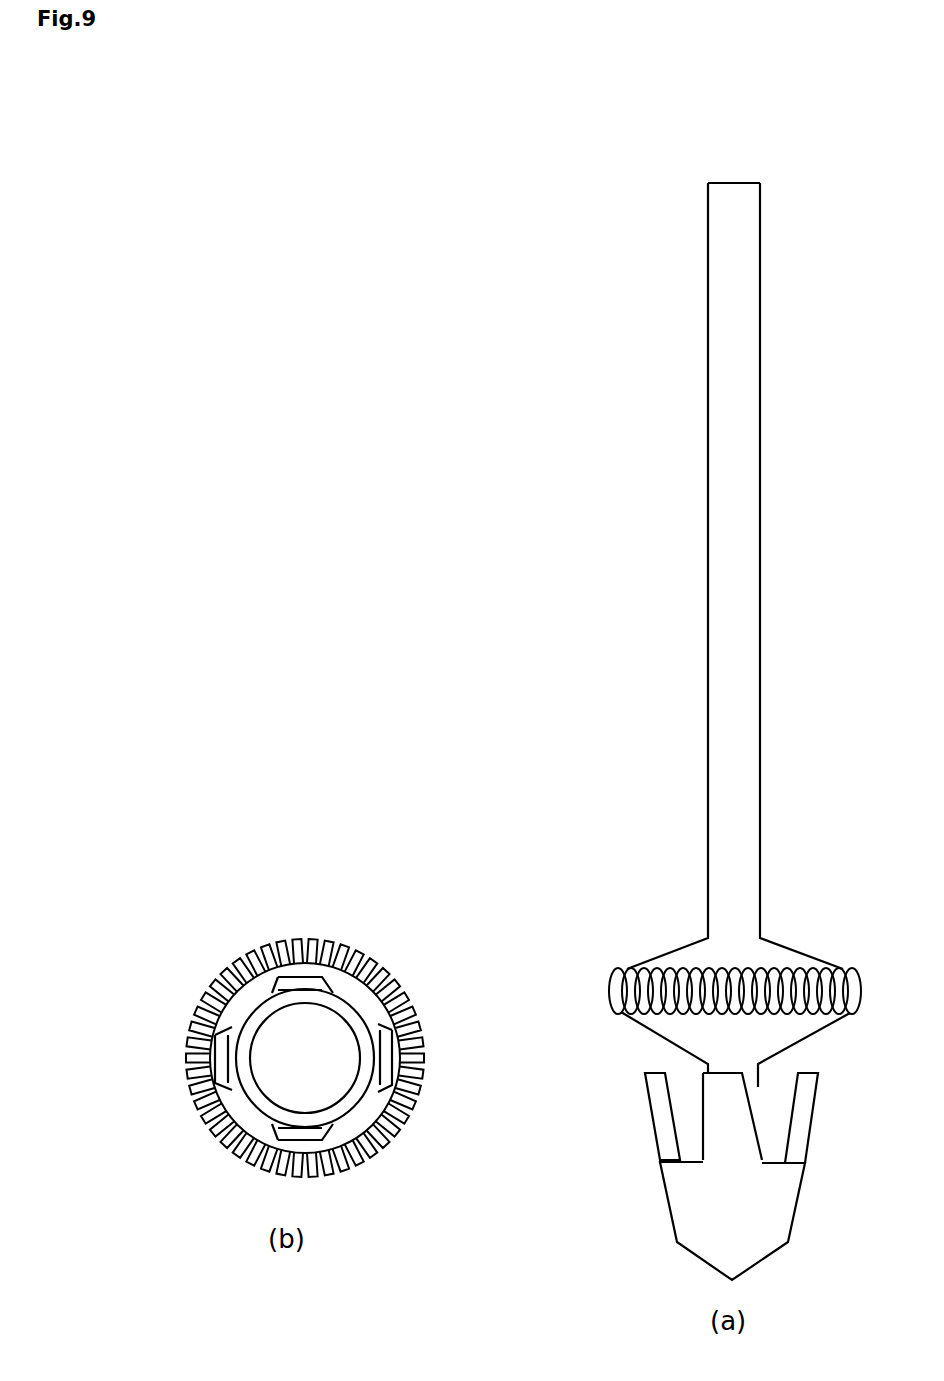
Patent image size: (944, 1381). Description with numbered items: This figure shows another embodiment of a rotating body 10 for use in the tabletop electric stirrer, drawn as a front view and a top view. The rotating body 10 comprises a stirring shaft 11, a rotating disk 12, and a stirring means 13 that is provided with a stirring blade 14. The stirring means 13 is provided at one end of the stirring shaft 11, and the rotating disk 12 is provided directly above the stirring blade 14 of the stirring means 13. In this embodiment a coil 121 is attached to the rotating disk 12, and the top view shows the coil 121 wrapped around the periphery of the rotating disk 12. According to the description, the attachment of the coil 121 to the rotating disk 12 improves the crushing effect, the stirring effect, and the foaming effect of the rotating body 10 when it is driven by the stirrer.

The rotating body 10 is at (636, 268).
The stirring shaft 11 is at (730, 413).
The rotating disk 12 is at (683, 963).
The coil 121 is at (618, 1012).
The stirring means 13 is at (695, 1195).
The stirring blade 14 is at (660, 1105).